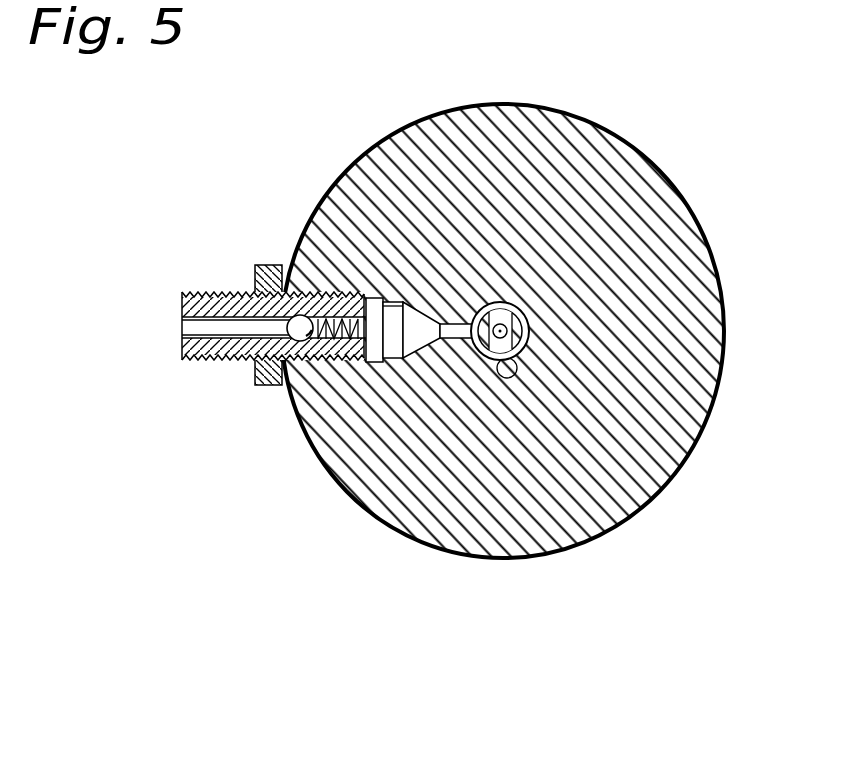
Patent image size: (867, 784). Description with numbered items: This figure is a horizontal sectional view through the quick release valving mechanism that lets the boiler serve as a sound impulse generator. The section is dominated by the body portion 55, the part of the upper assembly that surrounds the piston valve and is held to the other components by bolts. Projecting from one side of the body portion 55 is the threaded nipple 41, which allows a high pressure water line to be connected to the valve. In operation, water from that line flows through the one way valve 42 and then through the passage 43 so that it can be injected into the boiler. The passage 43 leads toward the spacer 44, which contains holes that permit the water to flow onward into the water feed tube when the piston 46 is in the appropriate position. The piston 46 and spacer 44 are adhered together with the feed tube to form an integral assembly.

The threaded nipple 41 is at (214, 360).
The one way valve 42 is at (296, 320).
The passage 43 is at (436, 350).
The spacer 44 is at (504, 329).
The piston 46 is at (487, 304).
The body portion 55 is at (725, 351).